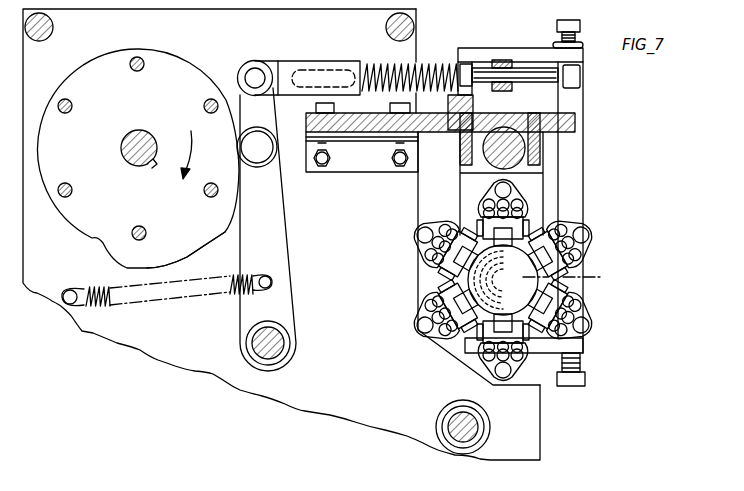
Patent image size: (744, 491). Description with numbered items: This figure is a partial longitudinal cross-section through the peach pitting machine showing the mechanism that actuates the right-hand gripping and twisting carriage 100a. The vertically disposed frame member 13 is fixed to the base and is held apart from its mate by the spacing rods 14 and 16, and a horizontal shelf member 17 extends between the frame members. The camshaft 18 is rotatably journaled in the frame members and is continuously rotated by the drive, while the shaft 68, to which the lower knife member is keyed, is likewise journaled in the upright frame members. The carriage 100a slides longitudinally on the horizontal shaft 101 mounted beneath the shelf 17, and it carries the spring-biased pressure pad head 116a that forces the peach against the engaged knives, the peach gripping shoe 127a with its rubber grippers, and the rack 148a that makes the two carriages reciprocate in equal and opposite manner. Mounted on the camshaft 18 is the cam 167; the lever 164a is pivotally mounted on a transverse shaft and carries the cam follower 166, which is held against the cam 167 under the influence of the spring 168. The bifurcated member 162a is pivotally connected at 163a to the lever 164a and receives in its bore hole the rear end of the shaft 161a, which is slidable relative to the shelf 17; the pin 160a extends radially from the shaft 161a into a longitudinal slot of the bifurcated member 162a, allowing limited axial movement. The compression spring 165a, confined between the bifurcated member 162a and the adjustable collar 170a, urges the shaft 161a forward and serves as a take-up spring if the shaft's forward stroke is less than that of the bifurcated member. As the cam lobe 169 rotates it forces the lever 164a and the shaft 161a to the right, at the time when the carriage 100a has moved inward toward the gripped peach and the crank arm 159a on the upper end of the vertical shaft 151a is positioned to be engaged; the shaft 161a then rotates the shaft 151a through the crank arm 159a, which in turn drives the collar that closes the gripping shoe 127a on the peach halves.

The frame member 13 is at (346, 400).
The spacing rod 14 is at (52, 31).
The spacing rod 16 is at (386, 27).
The shelf member 17 is at (577, 124).
The camshaft 18 is at (150, 142).
The shaft 68 is at (457, 410).
The carriage 100a is at (600, 227).
The horizontal shaft 101 is at (493, 143).
The pressure pad head 116a is at (525, 281).
The peach gripping shoe 127a is at (585, 311).
The rack 148a is at (471, 107).
The shaft 151a is at (575, 170).
The crank arm 159a is at (575, 79).
The pin 160a is at (358, 66).
The shaft 161a is at (535, 72).
The bifurcated member 162a is at (287, 69).
The pivotal connection 163a is at (268, 56).
The lever 164a is at (278, 250).
The compression spring 165a is at (458, 57).
The cam follower 166 is at (276, 155).
The cam 167 is at (106, 236).
The spring 168 is at (107, 305).
The cam lobe 169 is at (191, 246).
The adjustable collar 170a is at (465, 62).